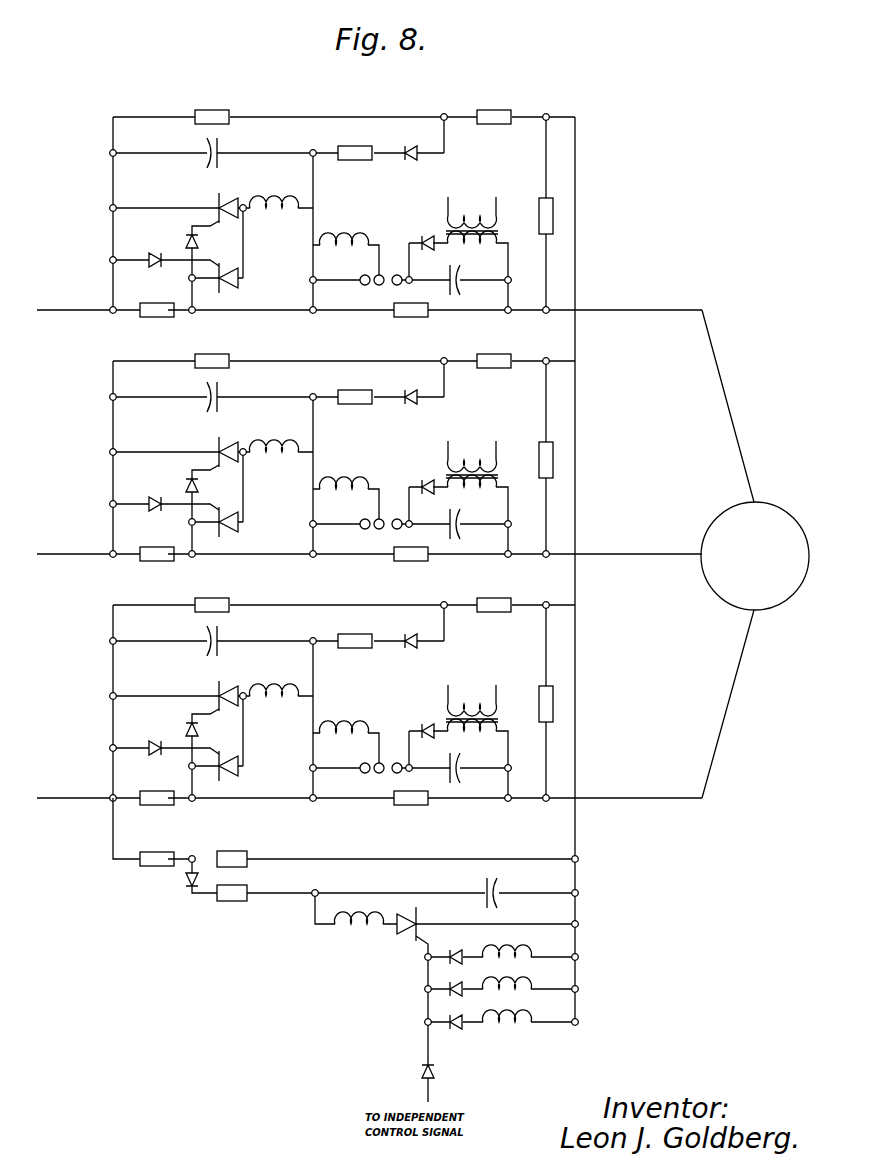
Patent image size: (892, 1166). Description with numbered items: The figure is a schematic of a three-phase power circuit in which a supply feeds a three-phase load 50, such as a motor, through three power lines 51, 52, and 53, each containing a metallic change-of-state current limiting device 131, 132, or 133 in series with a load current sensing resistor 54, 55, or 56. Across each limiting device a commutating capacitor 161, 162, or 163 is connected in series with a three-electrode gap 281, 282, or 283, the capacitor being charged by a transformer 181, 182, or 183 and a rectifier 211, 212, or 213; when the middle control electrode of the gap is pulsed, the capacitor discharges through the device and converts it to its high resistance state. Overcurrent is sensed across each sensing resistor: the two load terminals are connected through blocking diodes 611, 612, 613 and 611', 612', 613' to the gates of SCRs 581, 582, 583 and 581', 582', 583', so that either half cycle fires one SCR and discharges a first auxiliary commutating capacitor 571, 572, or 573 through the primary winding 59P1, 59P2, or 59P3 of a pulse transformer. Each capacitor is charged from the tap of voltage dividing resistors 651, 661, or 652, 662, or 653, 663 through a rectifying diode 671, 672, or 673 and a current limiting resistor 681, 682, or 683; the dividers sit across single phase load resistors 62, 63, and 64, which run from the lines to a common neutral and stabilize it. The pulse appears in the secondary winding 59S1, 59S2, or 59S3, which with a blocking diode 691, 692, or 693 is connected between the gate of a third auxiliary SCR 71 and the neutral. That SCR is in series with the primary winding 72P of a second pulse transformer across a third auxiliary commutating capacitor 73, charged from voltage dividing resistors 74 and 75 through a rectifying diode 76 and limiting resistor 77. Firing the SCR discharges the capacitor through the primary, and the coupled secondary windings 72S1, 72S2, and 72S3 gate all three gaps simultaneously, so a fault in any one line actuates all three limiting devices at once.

The three-phase load 50 is at (720, 522).
The power line 51 is at (62, 310).
The power line 52 is at (369, 540).
The power line 53 is at (369, 784).
The load current sensing resistor 54 is at (148, 318).
The load current sensing resistor 55 is at (152, 570).
The load current sensing resistor 56 is at (157, 814).
The single phase load resistor 62 is at (541, 206).
The single phase load resistor 63 is at (535, 444).
The single phase load resistor 64 is at (535, 688).
The voltage dividing resistor 651 is at (218, 101).
The voltage dividing resistor 652 is at (213, 348).
The voltage dividing resistor 653 is at (213, 592).
The voltage dividing resistor 661 is at (500, 109).
The voltage dividing resistor 662 is at (498, 351).
The voltage dividing resistor 663 is at (498, 595).
The first auxiliary commutating capacitor 571 is at (222, 153).
The first auxiliary commutating capacitor 572 is at (234, 393).
The first auxiliary commutating capacitor 573 is at (234, 637).
The current limiting resistor 681 is at (353, 161).
The current limiting resistor 682 is at (355, 413).
The current limiting resistor 683 is at (355, 657).
The rectifying diode 671 is at (413, 161).
The rectifying diode 672 is at (419, 413).
The rectifying diode 673 is at (419, 657).
The SCR 581 is at (245, 198).
The SCR 582 is at (209, 442).
The SCR 583 is at (245, 686).
The SCR 581' is at (253, 278).
The SCR 582' is at (253, 522).
The SCR 583' is at (253, 766).
The blocking diode 611 is at (176, 233).
The blocking diode 612 is at (176, 477).
The blocking diode 613 is at (176, 721).
The blocking diode 611' is at (141, 249).
The blocking diode 612' is at (141, 493).
The blocking diode 613' is at (141, 737).
The primary winding of pulse transformer 59P1 is at (276, 223).
The primary winding of pulse transformer 59P2 is at (276, 434).
The primary winding of pulse transformer 59P3 is at (276, 713).
The secondary winding 72S1 is at (350, 241).
The secondary winding 72S2 is at (352, 469).
The secondary winding 72S3 is at (352, 713).
The three-electrode gap 281 is at (366, 286).
The three-electrode gap 282 is at (374, 539).
The three-electrode gap 283 is at (374, 783).
The rectifier 211 is at (425, 242).
The rectifier 212 is at (419, 475).
The rectifier 213 is at (419, 719).
The transformer 181 is at (498, 231).
The transformer 182 is at (492, 473).
The transformer 183 is at (492, 717).
The commutating capacitor 161 is at (462, 280).
The commutating capacitor 162 is at (475, 523).
The commutating capacitor 163 is at (475, 767).
The current limiting device 131 is at (424, 315).
The current limiting device 132 is at (430, 567).
The current limiting device 133 is at (430, 811).
The voltage dividing resistor 74 is at (155, 867).
The voltage dividing resistor 75 is at (230, 851).
The rectifying diode 76 is at (186, 888).
The limiting resistor 77 is at (238, 902).
The third auxiliary commutating capacitor 73 is at (498, 890).
The primary winding of second pulse transformer 72P is at (355, 931).
The third auxiliary SCR 71 is at (403, 935).
The blocking diode 691 is at (465, 948).
The blocking diode 692 is at (470, 982).
The blocking diode 693 is at (460, 1030).
The secondary winding of pulse transformer 59S1 is at (520, 955).
The secondary winding of pulse transformer 59S2 is at (535, 982).
The secondary winding of pulse transformer 59S3 is at (535, 1015).